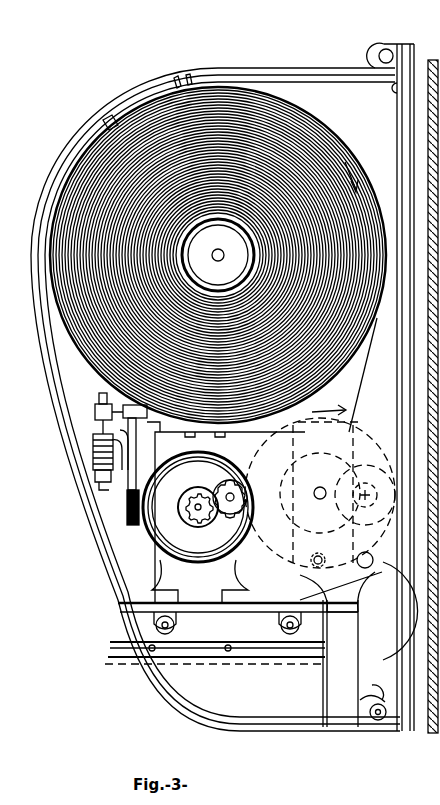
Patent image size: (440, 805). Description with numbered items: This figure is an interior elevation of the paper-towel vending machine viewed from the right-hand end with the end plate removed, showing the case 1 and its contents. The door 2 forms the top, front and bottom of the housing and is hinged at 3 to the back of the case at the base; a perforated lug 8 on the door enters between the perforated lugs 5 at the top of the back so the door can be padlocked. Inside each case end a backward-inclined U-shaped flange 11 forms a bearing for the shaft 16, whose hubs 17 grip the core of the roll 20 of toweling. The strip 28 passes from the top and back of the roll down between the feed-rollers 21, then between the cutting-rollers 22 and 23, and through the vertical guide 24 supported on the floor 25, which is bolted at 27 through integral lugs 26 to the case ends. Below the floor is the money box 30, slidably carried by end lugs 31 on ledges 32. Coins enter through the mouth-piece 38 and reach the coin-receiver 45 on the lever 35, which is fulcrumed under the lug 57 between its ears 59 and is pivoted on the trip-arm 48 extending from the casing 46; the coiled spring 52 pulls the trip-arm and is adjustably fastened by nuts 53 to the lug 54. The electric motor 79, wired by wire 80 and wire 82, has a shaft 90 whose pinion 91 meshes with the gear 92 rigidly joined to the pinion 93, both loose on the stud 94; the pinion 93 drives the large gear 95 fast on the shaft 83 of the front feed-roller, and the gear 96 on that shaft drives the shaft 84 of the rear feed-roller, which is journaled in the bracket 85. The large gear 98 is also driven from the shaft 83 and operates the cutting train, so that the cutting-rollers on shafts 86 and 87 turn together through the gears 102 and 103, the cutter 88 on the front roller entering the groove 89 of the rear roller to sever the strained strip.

The case 1 is at (352, 148).
The door 2 is at (52, 362).
The hinge 3 is at (378, 722).
The perforated lugs 5 is at (403, 46).
The perforated lug 8 is at (378, 62).
The U-shaped flange 11 is at (190, 70).
The shaft 16 is at (218, 255).
The collars or hubs 17 is at (237, 256).
The roll of paper-toweling 20 is at (88, 162).
The feed-rollers 21 is at (314, 470).
The cutting-roller 22 is at (332, 592).
The cutting-roller 23 is at (394, 611).
The vertical guide 24 is at (340, 663).
The horizontal floor 25 is at (140, 605).
The integral lugs 26 is at (280, 625).
The bolts 27 is at (158, 628).
The strip of toweling 28 is at (367, 375).
The money box 30 is at (238, 651).
The end lugs 31 is at (190, 657).
The ledges 32 is at (345, 663).
The lever 35 is at (128, 504).
The mouth-piece 38 is at (106, 116).
The coin-receiver 45 is at (118, 524).
The casing 46 is at (263, 575).
The trip-arm 48 is at (128, 478).
The coiled spring 52 is at (93, 452).
The nuts 53 is at (98, 400).
The lug 54 is at (95, 414).
The lug 57 is at (123, 392).
The ears 59 is at (95, 470).
The electric motor 79 is at (133, 524).
The wire 80 is at (218, 440).
The wire 82 is at (172, 488).
The shaft 83 is at (343, 457).
The shaft 84 is at (332, 605).
The bracket 85 is at (373, 683).
The shaft 86 is at (311, 544).
The shaft 87 is at (359, 516).
The cutter 88 is at (337, 635).
The longitudinal groove 89 is at (369, 631).
The motor shaft 90 is at (218, 463).
The pinion 91 is at (198, 507).
The gear 92 is at (198, 519).
The pinion 93 is at (230, 516).
The stud 94 is at (273, 471).
The large gear 95 is at (273, 493).
The gear 96 is at (373, 793).
The large gear 98 is at (409, 796).
The gear 102 is at (294, 583).
The gear 103 is at (349, 613).